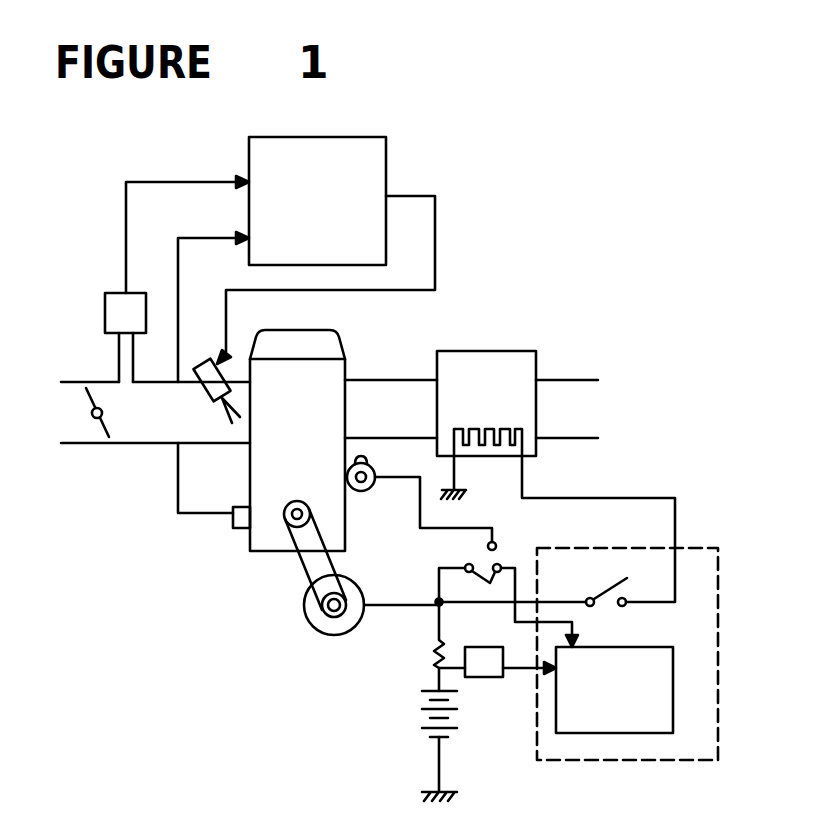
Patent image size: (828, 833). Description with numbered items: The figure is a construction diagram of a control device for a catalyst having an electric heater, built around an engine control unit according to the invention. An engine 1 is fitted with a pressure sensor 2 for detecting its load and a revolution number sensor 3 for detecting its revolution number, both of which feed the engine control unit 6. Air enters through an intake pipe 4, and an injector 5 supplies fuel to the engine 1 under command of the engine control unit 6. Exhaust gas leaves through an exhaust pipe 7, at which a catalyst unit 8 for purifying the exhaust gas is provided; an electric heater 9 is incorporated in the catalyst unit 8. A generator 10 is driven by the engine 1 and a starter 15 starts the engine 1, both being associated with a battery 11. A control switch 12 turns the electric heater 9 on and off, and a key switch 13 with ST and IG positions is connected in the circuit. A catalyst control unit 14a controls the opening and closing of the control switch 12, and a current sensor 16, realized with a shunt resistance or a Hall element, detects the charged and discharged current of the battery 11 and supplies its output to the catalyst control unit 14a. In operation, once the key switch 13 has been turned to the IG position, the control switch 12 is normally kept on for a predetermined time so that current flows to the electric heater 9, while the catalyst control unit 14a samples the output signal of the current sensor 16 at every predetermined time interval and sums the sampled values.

The engine 1 is at (345, 528).
The pressure sensor 2 is at (105, 315).
The revolution number sensor 3 is at (241, 531).
The intake pipe 4 is at (130, 444).
The injector 5 is at (204, 356).
The engine control unit 6 is at (387, 163).
The exhaust pipe 7 is at (387, 379).
The catalyst unit 8 is at (489, 350).
The electric heater 9 is at (497, 445).
The generator 10 is at (321, 633).
The battery 11 is at (420, 717).
The control switch 12 is at (609, 594).
The key switch 13 is at (496, 545).
The catalyst control unit 14a is at (605, 733).
The starter 15 is at (364, 492).
The current sensor 16 is at (483, 678).